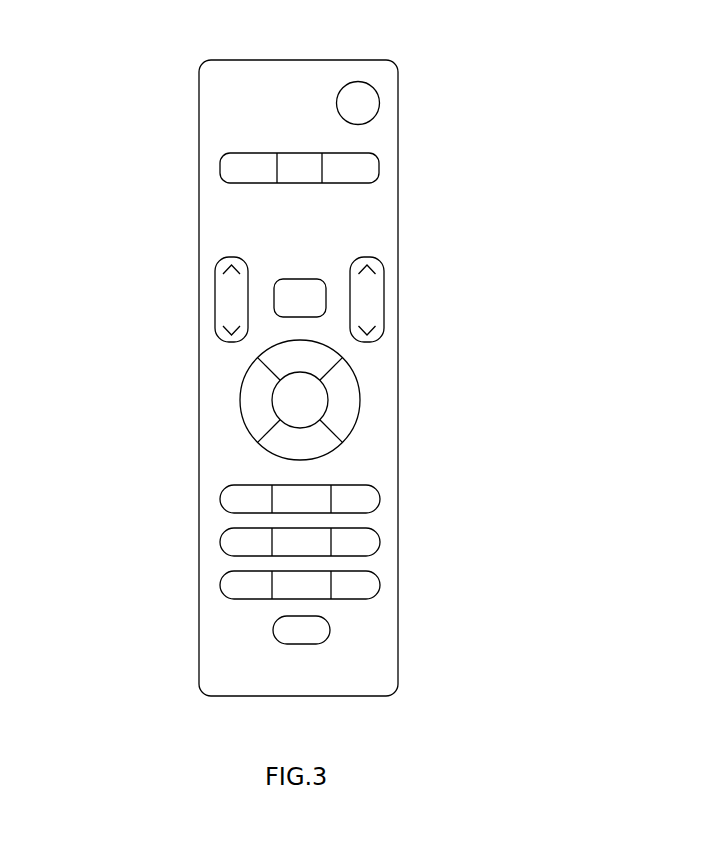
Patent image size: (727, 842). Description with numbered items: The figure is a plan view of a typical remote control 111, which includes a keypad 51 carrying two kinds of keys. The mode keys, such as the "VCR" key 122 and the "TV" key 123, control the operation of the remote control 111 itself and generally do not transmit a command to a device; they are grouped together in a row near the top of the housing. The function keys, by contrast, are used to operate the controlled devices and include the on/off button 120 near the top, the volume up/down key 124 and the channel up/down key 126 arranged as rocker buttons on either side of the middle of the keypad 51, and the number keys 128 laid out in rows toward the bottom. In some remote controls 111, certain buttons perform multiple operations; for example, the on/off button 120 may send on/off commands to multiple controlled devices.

The keypad 51 is at (552, 219).
The remote control 111 is at (199, 97).
The on/off button 120 is at (379, 103).
The "VCR" mode key 122 is at (378, 170).
The "TV" mode key 123 is at (293, 153).
The volume up/down key 124 is at (215, 298).
The channel up/down key 126 is at (385, 291).
The number keys 128 is at (227, 499).